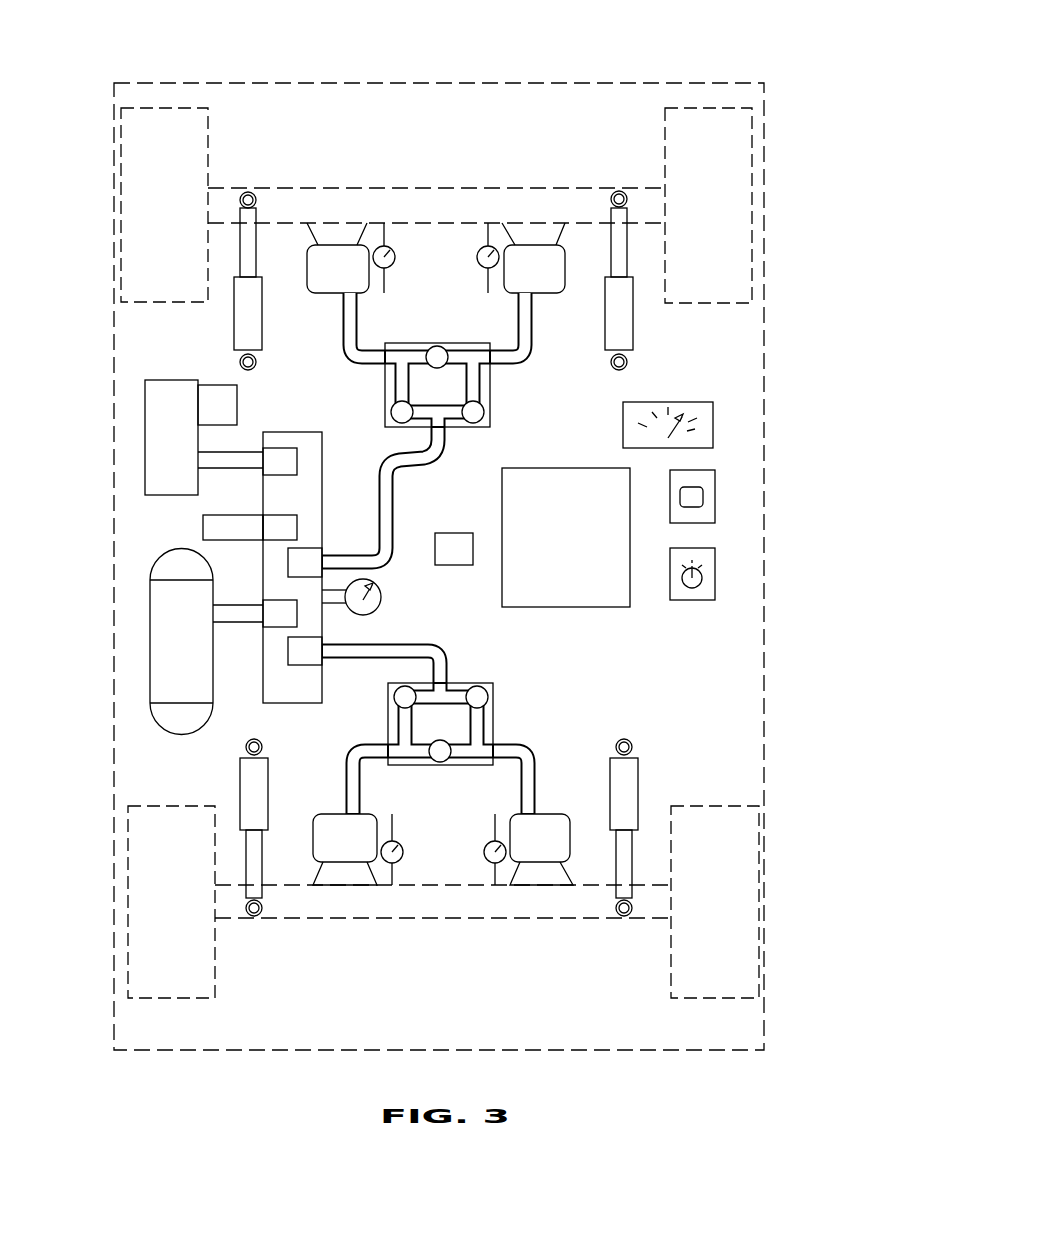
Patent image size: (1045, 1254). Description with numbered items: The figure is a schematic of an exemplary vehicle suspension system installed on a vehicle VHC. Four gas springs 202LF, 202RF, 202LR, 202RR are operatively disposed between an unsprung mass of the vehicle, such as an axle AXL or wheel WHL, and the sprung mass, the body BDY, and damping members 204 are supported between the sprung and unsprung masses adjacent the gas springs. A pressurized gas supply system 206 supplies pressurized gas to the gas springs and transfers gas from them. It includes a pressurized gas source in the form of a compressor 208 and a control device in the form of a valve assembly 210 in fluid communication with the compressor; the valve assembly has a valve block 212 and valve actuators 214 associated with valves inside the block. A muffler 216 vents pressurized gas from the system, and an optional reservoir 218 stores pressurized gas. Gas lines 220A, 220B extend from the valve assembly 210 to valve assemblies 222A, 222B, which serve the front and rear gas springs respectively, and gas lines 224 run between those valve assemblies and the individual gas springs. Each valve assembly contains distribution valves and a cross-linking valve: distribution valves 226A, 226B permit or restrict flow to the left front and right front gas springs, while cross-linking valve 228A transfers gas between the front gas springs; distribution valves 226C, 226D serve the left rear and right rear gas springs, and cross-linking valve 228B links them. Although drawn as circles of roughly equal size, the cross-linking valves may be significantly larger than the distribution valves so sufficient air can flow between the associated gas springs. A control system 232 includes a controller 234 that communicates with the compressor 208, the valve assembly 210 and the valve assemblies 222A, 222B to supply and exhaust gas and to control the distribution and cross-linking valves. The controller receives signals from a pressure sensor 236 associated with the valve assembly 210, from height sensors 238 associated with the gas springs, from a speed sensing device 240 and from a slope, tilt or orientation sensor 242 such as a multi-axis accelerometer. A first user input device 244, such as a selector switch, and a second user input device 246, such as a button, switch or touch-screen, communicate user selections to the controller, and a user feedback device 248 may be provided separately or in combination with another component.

The vehicle VHC is at (697, 48).
The body BDY is at (512, 83).
The wheel WHL is at (145, 168).
The axle AXL is at (439, 188).
The left front gas spring 202LF is at (338, 260).
The right front gas spring 202RF is at (540, 258).
The left rear gas spring 202LR is at (343, 848).
The right rear gas spring 202RR is at (543, 848).
The damping member 204 is at (247, 313).
The pressurized gas supply system 206 is at (157, 517).
The compressor 208 is at (160, 423).
The valve assembly 210 is at (260, 582).
The valve block 212 is at (309, 432).
The valve actuator 214 is at (282, 477).
The muffler 216 is at (212, 530).
The reservoir 218 is at (162, 678).
The gas line 220A is at (387, 483).
The gas line 220B is at (387, 653).
The valve assembly 222A is at (462, 343).
The valve assembly 222B is at (497, 717).
The gas line 224 is at (342, 315).
The distribution valve 226A is at (394, 405).
The distribution valve 226B is at (482, 405).
The distribution valve 226C is at (393, 698).
The distribution valve 226D is at (523, 683).
The cross-linking valve 228A is at (428, 365).
The cross-linking valve 228B is at (437, 762).
The control system 232 is at (637, 638).
The controller 234 is at (587, 538).
The pressure sensor 236 is at (381, 600).
The height sensor 238 is at (477, 256).
The speed sensing device 240 is at (707, 423).
The slope, tilt or orientation sensor 242 is at (455, 533).
The first user input device 244 is at (707, 580).
The second user input device 246 is at (707, 513).
The user feedback device 248 is at (693, 497).